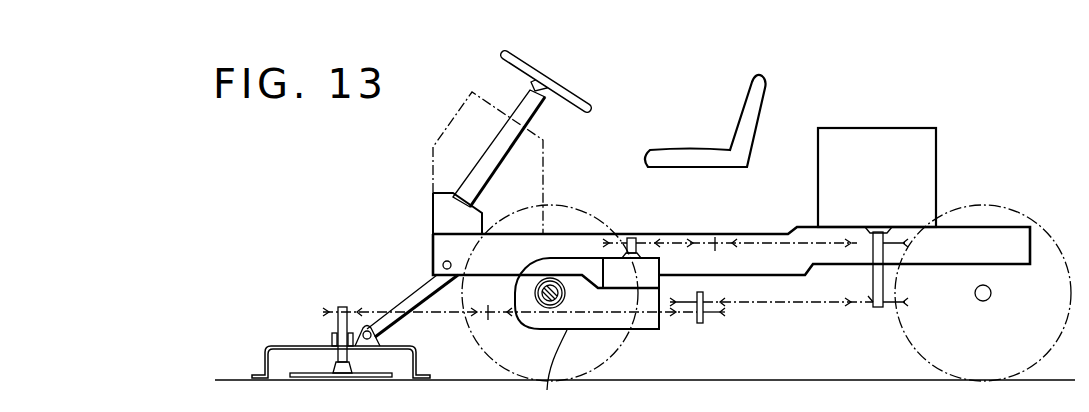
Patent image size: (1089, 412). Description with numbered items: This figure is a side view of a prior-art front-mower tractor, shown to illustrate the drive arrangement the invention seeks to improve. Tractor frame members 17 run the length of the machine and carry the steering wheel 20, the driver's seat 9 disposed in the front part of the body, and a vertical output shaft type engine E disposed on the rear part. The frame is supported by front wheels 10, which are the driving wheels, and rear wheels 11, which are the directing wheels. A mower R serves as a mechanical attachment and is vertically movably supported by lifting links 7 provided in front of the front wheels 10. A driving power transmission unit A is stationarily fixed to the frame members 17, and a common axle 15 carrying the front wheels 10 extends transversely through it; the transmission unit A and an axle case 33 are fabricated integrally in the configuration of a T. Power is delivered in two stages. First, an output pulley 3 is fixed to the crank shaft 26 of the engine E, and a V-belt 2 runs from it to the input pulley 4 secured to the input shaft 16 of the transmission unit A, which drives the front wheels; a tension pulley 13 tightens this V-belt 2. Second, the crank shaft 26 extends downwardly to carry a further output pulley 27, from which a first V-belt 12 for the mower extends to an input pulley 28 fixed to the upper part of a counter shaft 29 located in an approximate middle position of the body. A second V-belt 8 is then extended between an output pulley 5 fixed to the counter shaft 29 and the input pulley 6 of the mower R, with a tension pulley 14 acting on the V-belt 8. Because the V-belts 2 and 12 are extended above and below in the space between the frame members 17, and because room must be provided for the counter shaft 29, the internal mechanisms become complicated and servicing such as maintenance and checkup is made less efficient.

The V-belt 2 is at (805, 234).
The output pulley 3 is at (864, 234).
The input pulley 4 is at (623, 253).
The output pulley 5 is at (713, 323).
The input pulley 6 is at (333, 306).
The lifting links 7 is at (407, 295).
The V-belt 8 is at (438, 314).
The driver's seat 9 is at (756, 98).
The front wheels 10 is at (483, 350).
The rear wheels 11 is at (1003, 206).
The V-belt 12 is at (787, 303).
The tension pulley 13 is at (728, 226).
The tension pulley 14 is at (497, 313).
The axle 15 is at (536, 283).
The input shaft 16 is at (633, 238).
The tractor frame members 17 is at (763, 234).
The steering wheel 20 is at (590, 109).
The crank shaft 26 is at (873, 283).
The output pulley 27 is at (866, 308).
The input pulley 28 is at (682, 297).
The counter shaft 29 is at (698, 323).
The axle case 33 is at (561, 282).
The driving power transmission unit A is at (556, 370).
The engine E is at (875, 130).
The mower R is at (285, 345).